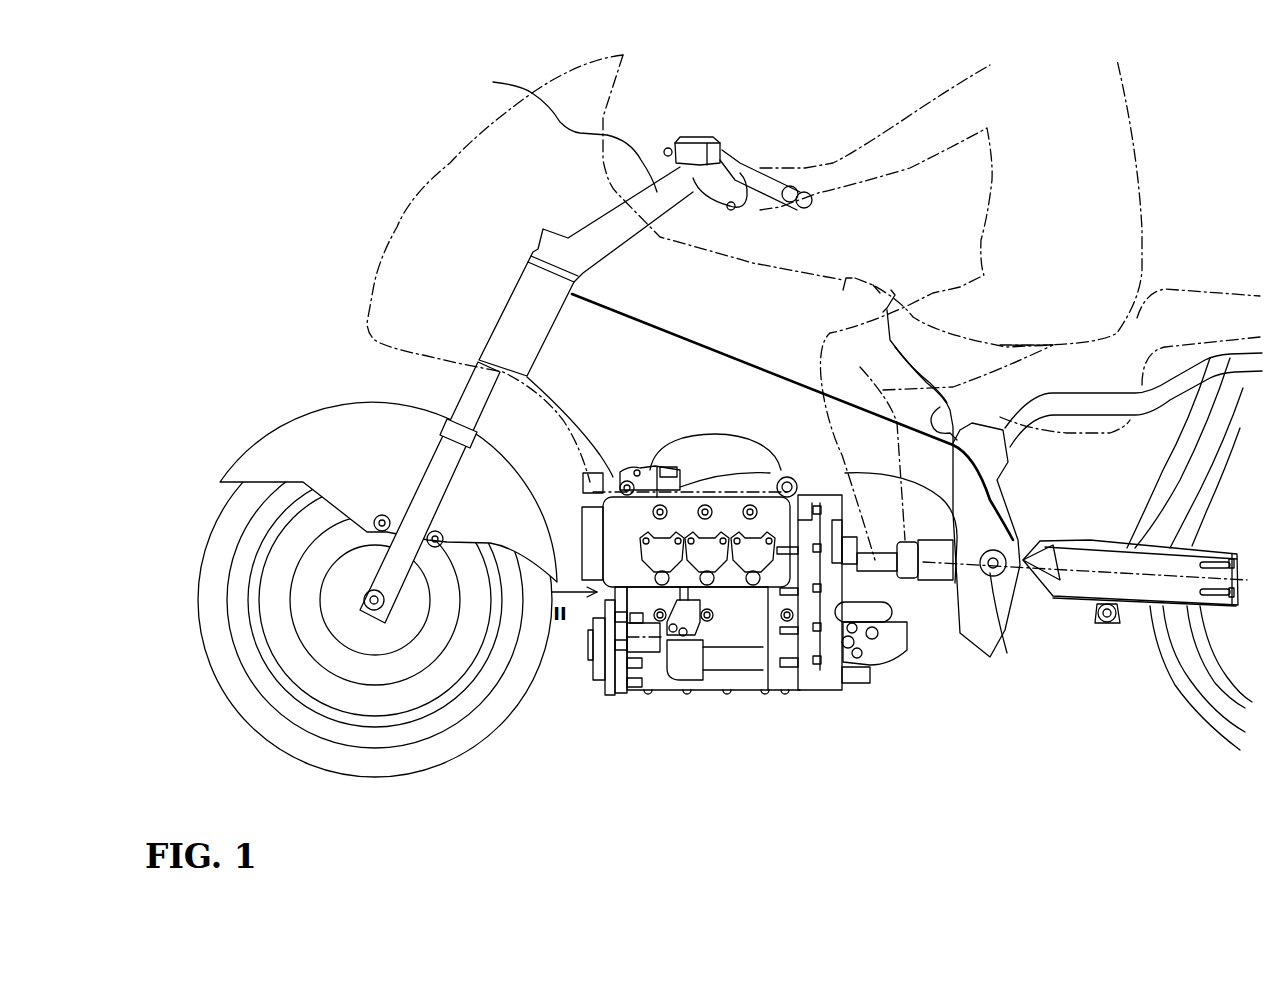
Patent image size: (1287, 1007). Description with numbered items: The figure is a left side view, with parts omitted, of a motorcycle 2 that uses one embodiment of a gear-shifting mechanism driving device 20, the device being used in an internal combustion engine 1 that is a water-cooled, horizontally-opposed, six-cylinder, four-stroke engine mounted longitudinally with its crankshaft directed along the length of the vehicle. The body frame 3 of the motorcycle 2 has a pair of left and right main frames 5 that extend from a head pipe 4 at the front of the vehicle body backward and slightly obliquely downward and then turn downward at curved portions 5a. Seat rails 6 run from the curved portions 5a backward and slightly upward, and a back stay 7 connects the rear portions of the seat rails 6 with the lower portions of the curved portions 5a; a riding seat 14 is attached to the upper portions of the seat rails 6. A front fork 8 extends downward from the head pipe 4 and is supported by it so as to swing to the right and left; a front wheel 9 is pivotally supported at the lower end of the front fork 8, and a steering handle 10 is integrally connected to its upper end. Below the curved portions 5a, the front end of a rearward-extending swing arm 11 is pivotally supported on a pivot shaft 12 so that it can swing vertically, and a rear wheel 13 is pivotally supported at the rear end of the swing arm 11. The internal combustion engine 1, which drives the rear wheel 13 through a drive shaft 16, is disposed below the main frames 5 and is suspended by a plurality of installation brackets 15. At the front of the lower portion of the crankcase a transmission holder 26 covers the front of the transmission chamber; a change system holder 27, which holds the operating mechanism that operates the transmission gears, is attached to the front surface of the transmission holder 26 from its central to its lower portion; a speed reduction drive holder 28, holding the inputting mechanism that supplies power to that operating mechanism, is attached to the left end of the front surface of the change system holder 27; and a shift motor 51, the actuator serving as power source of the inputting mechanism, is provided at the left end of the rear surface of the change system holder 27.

The internal combustion engine 1 is at (742, 614).
The motorcycle 2 is at (353, 290).
The body frame 3 is at (513, 260).
The head pipe 4 is at (517, 317).
The main frames 5 is at (640, 363).
The curved portions 5a is at (973, 500).
The seat rails 6 is at (1075, 413).
The back stay 7 is at (1137, 532).
The front fork 8 is at (467, 407).
The front wheel 9 is at (220, 560).
The steering handle 10 is at (493, 82).
The swing arm 11 is at (1100, 584).
The pivot shaft 12 is at (990, 576).
The rear wheel 13 is at (1160, 638).
The riding seat 14 is at (1150, 330).
The installation brackets 15 is at (747, 500).
The drive shaft 16 is at (888, 568).
The gear-shifting mechanism driving device 20 is at (597, 691).
The transmission holder 26 is at (622, 694).
The change system holder 27 is at (606, 688).
The speed reduction drive holder 28 is at (592, 668).
The shift motor 51 is at (643, 692).